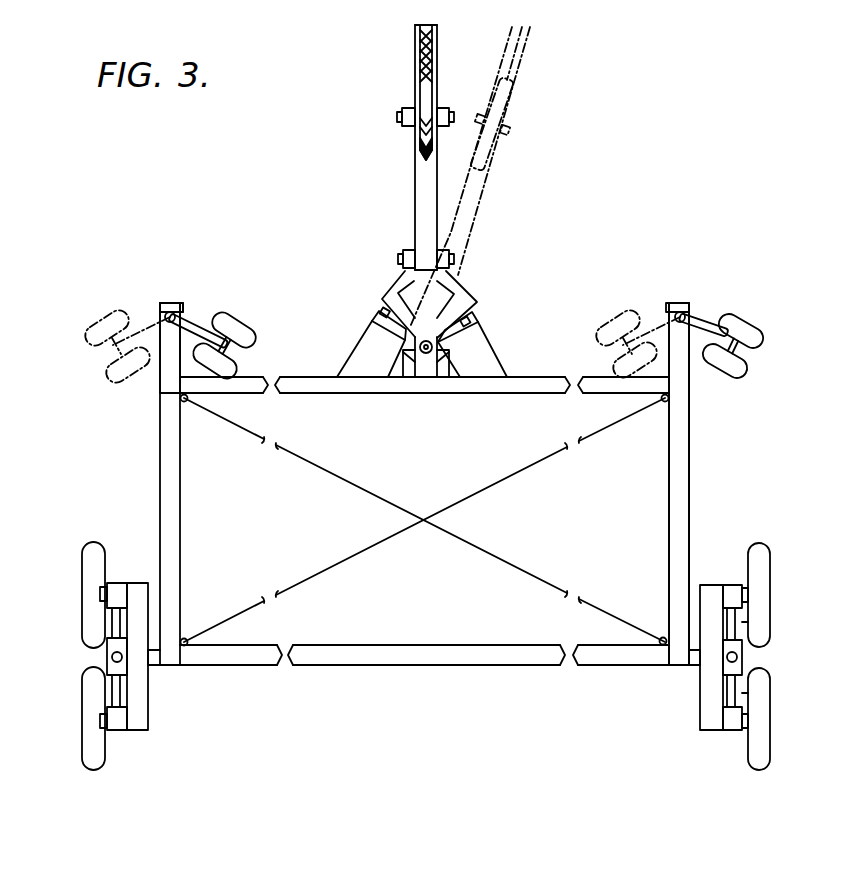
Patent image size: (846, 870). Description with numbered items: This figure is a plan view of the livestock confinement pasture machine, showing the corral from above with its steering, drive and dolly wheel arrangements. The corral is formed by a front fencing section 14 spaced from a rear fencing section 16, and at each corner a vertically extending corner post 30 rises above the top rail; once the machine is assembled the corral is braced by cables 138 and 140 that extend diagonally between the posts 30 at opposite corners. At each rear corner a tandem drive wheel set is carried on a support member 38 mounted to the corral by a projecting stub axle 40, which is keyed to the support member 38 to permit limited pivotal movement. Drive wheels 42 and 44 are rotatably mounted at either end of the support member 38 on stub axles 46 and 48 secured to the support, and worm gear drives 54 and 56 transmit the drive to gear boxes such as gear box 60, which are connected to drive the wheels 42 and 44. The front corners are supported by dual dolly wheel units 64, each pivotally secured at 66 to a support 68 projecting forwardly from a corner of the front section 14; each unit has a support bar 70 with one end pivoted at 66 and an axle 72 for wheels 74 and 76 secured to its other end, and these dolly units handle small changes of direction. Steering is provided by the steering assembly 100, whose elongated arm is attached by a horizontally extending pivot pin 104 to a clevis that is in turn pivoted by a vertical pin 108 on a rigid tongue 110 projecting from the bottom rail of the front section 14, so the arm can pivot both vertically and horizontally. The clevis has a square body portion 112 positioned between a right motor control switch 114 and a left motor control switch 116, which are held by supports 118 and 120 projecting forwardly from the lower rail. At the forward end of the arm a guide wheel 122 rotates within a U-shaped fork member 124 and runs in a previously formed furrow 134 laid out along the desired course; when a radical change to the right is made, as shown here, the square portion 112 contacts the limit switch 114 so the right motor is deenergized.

The front fencing section 14 is at (526, 395).
The rear fencing section 16 is at (372, 653).
The corner post 30 is at (188, 402).
The support member 38 is at (700, 584).
The stub axle 40 is at (694, 648).
The drive wheel 42 is at (767, 565).
The drive wheel 44 is at (770, 743).
The axle 46 is at (752, 595).
The axle 48 is at (752, 720).
The worm gear drive 54 is at (742, 625).
The worm gear drive 56 is at (737, 693).
The gear box 60 is at (730, 585).
The dual dolly wheel unit 64 is at (137, 295).
The pivot 66 is at (178, 303).
The support 68 is at (167, 358).
The support bar 70 is at (188, 323).
The axle 72 is at (238, 363).
The wheel 74 is at (260, 330).
The wheel 76 is at (233, 370).
The steering assembly 100 is at (404, 195).
The pivot pin 104 is at (403, 258).
The vertical pin 108 is at (434, 354).
The tongue 110 is at (408, 376).
The square body portion 112 is at (456, 289).
The right motor control switch 114 is at (468, 332).
The left motor control switch 116 is at (381, 316).
The support 118 is at (480, 359).
The support 120 is at (362, 347).
The guide wheel 122 is at (424, 92).
The U-shaped fork member 124 is at (443, 108).
The furrow 134 is at (421, 43).
The cable 138 is at (494, 486).
The cable 140 is at (467, 544).